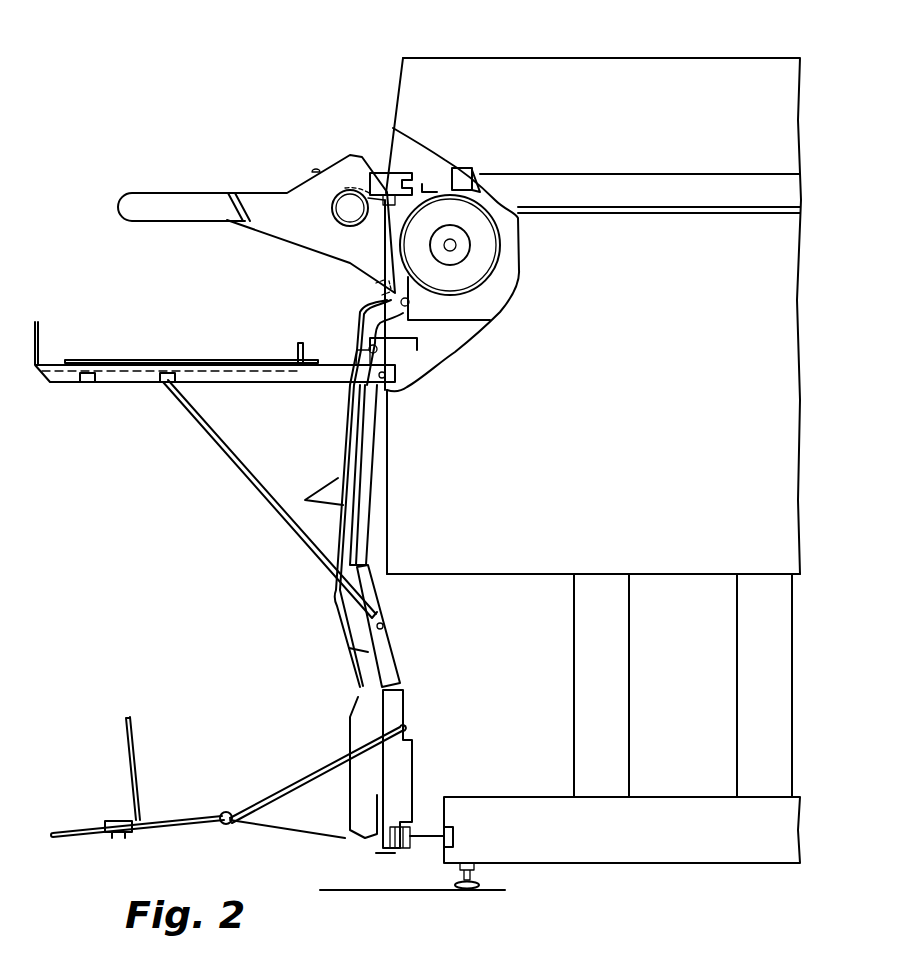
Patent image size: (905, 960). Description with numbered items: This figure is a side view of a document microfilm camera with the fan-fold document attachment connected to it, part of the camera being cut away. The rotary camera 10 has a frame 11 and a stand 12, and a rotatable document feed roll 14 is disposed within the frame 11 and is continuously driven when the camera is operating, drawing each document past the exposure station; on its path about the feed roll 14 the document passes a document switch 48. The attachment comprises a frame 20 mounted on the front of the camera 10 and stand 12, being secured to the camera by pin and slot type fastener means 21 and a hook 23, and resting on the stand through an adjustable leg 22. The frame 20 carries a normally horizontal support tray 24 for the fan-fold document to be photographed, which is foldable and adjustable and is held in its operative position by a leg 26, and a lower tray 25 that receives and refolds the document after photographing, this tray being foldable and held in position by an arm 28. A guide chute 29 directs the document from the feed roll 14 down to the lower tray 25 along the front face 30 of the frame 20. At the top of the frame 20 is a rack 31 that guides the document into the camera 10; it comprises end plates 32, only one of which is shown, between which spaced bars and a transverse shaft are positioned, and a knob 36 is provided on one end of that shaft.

The rotary camera 10 is at (628, 52).
The frame 11 is at (397, 78).
The stand 12 is at (566, 707).
The document feed roll 14 is at (488, 272).
The frame 20 is at (256, 218).
The pin and slot type fastener means 21 is at (402, 173).
The adjustable leg 22 is at (425, 842).
The hook 23 is at (420, 342).
The support tray 24 is at (92, 358).
The lower tray 25 is at (179, 812).
The leg 26 is at (252, 486).
The arm 28 is at (300, 782).
The guide chute 29 is at (333, 424).
The front face 30 is at (326, 590).
The rack 31 is at (256, 186).
The end plates 32 is at (266, 228).
The knob 36 is at (331, 210).
The document switch 48 is at (462, 172).